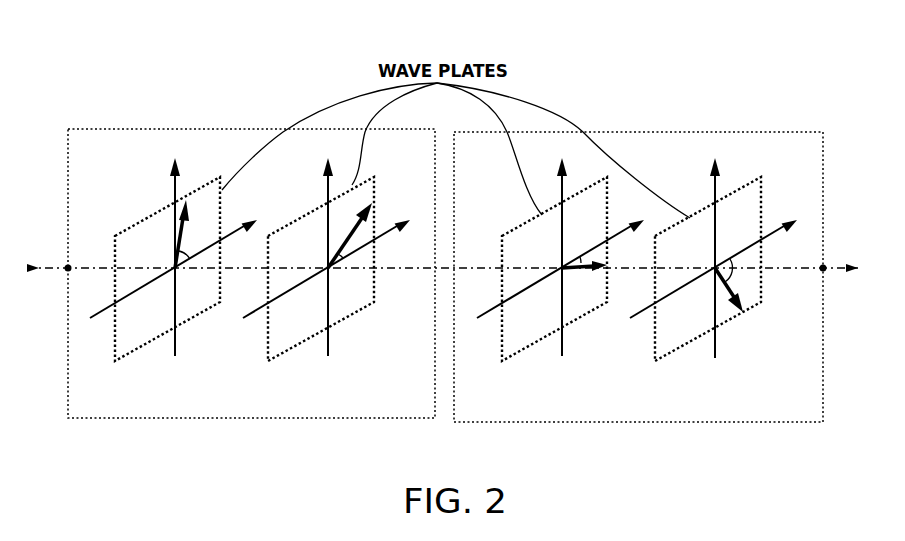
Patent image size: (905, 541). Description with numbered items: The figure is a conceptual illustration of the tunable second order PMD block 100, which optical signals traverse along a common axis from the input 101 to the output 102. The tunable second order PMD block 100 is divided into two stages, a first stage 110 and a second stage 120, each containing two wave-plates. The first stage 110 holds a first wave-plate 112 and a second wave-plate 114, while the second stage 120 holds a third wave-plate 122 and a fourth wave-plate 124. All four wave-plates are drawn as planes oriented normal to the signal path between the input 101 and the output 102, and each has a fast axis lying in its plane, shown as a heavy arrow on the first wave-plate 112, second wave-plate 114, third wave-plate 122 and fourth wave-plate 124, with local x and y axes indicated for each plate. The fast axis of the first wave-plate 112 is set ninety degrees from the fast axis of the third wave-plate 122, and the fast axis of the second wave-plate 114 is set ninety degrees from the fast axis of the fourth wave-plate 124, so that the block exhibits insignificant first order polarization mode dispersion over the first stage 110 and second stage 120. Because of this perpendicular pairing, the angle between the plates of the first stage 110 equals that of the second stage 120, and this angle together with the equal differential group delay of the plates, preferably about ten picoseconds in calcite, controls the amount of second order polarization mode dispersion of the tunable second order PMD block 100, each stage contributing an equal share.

The tunable second order PMD block 100 is at (153, 108).
The input 101 is at (65, 271).
The output 102 is at (825, 270).
The first stage 110 is at (272, 411).
The first wave-plate 112 is at (195, 317).
The second wave-plate 114 is at (350, 317).
The second stage 120 is at (658, 414).
The third wave-plate 122 is at (582, 317).
The fourth wave-plate 124 is at (720, 328).